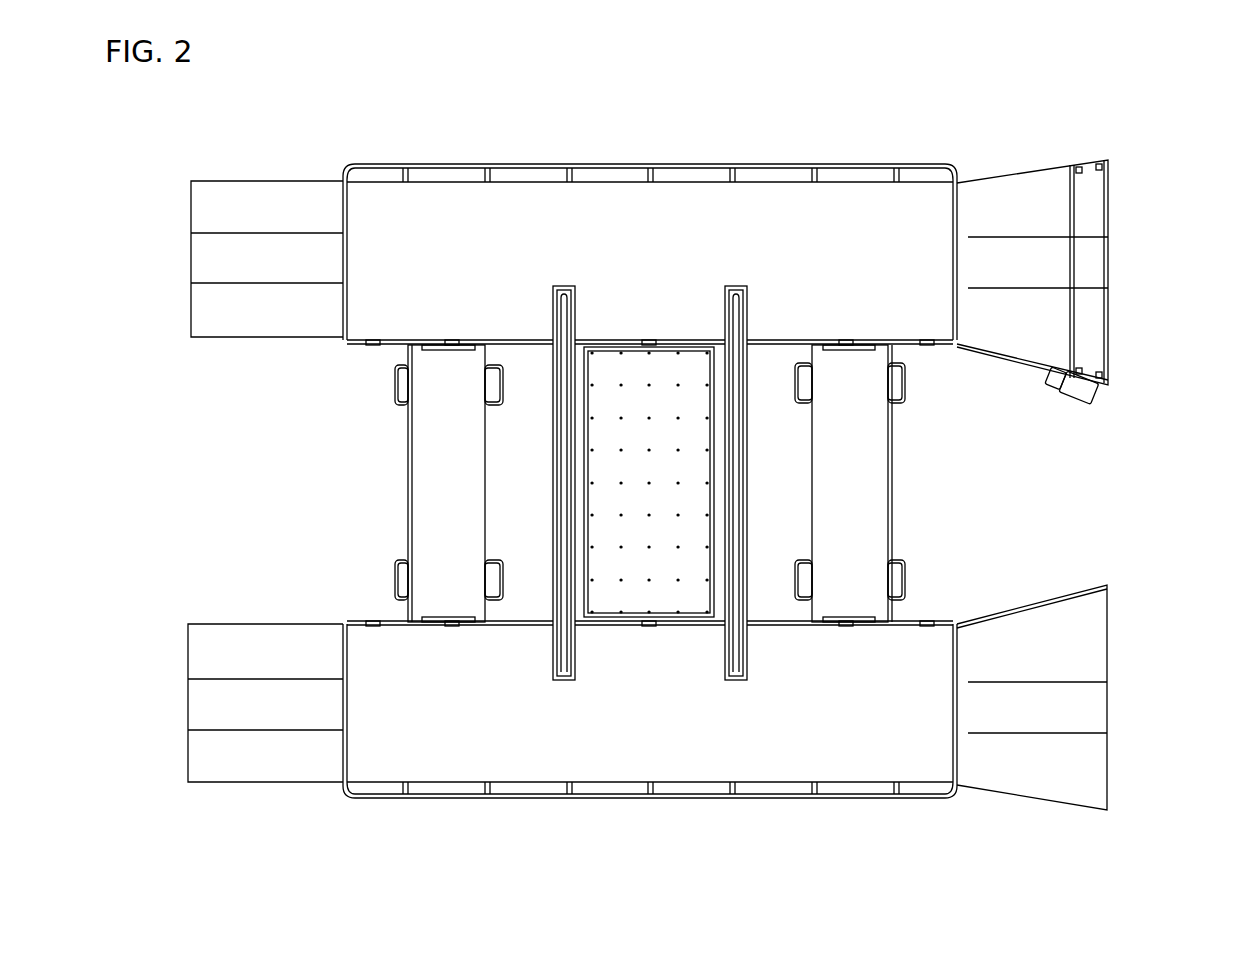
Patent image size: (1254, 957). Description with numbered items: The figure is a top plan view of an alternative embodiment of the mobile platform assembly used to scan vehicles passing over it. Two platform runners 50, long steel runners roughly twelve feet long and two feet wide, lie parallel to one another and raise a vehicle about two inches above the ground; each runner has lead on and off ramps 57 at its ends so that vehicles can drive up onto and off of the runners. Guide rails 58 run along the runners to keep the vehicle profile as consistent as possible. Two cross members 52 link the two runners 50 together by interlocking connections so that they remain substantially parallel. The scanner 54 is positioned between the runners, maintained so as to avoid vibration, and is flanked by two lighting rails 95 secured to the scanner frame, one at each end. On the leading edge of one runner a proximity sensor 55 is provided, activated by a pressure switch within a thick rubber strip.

The platform runner 50 is at (860, 213).
The cross member 52 is at (432, 468).
The scanner 54 is at (613, 375).
The proximity sensor 55 is at (1100, 396).
The lead on and off ramp 57 is at (258, 286).
The guide rail 58 is at (455, 163).
The lighting rail 95 is at (560, 507).